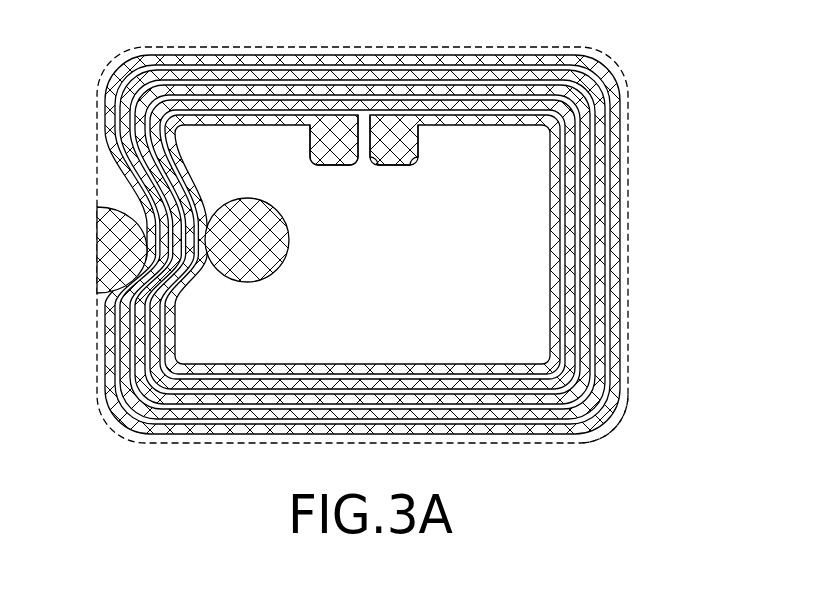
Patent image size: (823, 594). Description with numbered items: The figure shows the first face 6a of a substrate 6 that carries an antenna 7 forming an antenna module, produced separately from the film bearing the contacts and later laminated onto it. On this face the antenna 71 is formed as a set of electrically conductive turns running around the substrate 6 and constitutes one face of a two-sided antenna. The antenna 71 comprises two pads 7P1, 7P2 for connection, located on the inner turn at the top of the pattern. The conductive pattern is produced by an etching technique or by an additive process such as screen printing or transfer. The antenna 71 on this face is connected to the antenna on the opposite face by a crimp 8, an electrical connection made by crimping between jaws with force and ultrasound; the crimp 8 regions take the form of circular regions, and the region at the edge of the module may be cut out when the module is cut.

The substrate 6 is at (636, 168).
The first face 6a is at (623, 375).
The antenna 7 is at (418, 222).
The antenna 71 is at (590, 67).
The pad 7P1 is at (408, 165).
The pad 7P2 is at (335, 163).
The crimp 8 is at (276, 277).